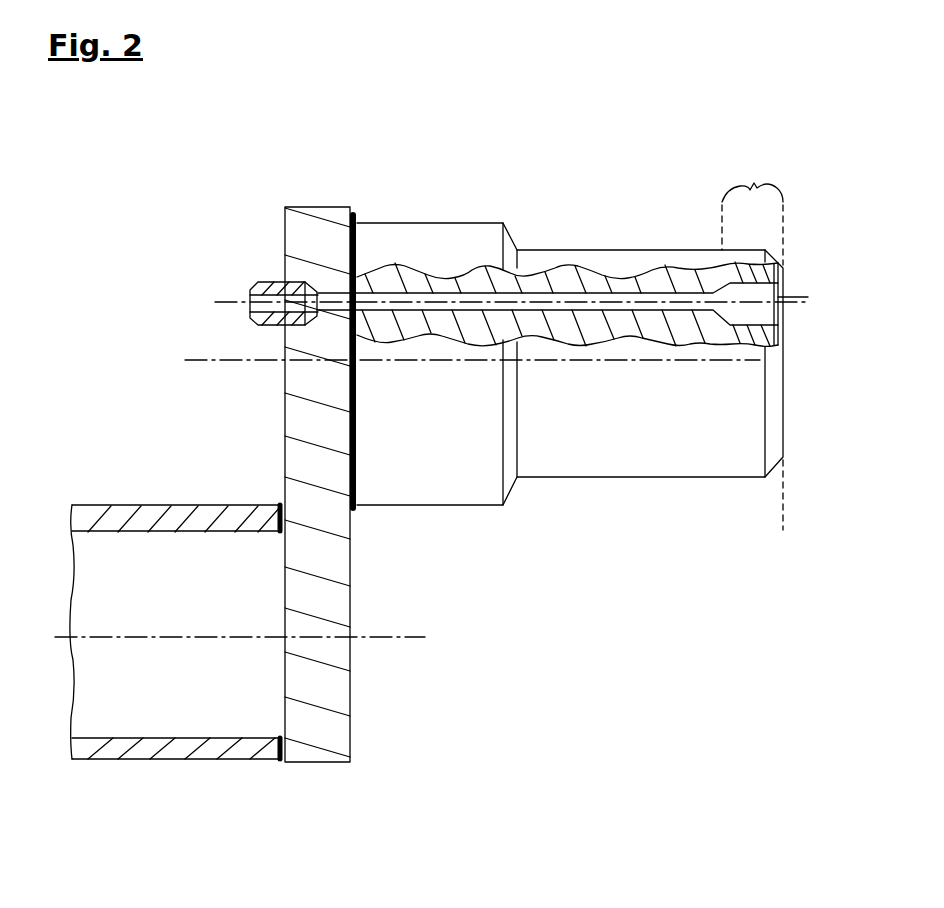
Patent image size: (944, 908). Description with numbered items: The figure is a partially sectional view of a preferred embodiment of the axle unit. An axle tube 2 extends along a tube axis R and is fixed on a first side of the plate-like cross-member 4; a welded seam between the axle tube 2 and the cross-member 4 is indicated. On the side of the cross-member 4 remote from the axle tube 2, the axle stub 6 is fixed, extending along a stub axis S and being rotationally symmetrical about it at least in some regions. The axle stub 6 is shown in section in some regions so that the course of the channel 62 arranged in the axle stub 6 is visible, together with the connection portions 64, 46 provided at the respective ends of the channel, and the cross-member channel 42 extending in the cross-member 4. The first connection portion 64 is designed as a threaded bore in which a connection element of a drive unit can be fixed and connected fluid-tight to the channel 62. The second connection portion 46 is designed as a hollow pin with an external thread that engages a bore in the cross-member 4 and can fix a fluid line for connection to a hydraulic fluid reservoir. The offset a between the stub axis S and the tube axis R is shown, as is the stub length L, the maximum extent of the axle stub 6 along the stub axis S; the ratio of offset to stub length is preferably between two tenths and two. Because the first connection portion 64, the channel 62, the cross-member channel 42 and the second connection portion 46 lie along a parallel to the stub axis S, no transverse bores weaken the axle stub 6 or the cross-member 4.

The axle tube 2 is at (178, 750).
The cross-member 4 is at (338, 598).
The axle stub 6 is at (737, 465).
The cross-member channel 42 is at (336, 298).
The second connection portion 46 is at (280, 282).
The channel 62 is at (580, 293).
The first connection portion 64 is at (754, 179).
The offset a is at (197, 637).
The stub length L is at (357, 510).
The tube axis R is at (250, 637).
The stub axis S is at (768, 363).